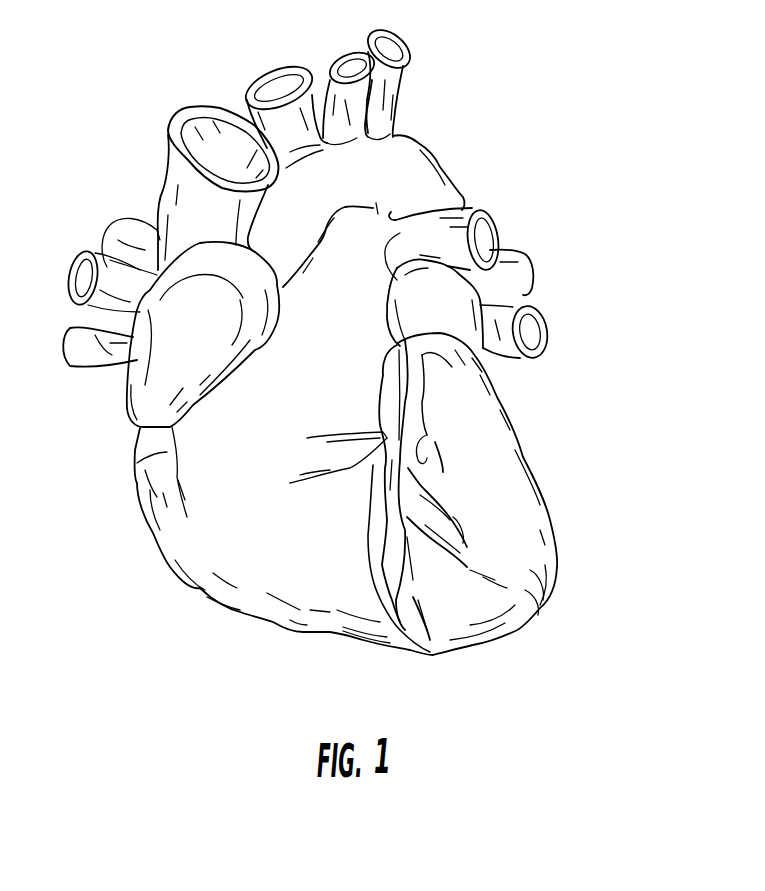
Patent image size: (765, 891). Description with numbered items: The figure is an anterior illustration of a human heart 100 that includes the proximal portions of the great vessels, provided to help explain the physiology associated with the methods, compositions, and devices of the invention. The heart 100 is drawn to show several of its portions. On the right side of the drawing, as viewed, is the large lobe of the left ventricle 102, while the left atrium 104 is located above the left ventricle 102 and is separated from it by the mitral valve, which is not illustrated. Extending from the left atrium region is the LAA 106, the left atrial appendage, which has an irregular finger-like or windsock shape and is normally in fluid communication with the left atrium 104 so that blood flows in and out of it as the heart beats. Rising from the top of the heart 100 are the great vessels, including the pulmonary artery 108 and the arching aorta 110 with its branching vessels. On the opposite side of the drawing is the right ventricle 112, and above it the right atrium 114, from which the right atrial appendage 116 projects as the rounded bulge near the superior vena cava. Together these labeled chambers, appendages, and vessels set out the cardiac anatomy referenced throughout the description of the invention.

The heart 100 is at (175, 617).
The left ventricle 102 is at (523, 577).
The left atrium 104 is at (545, 412).
The LAA 106 is at (457, 310).
The pulmonary artery 108 is at (503, 223).
The aorta 110 is at (393, 160).
The right ventricle 112 is at (200, 540).
The right atrium 114 is at (137, 463).
The right atrial appendage 116 is at (140, 373).